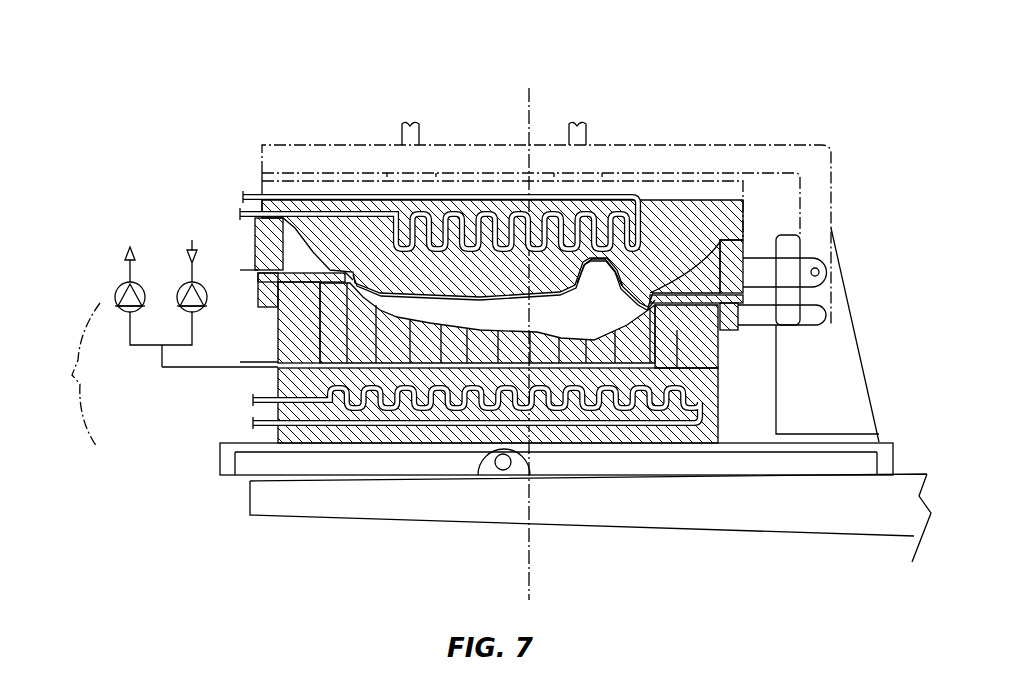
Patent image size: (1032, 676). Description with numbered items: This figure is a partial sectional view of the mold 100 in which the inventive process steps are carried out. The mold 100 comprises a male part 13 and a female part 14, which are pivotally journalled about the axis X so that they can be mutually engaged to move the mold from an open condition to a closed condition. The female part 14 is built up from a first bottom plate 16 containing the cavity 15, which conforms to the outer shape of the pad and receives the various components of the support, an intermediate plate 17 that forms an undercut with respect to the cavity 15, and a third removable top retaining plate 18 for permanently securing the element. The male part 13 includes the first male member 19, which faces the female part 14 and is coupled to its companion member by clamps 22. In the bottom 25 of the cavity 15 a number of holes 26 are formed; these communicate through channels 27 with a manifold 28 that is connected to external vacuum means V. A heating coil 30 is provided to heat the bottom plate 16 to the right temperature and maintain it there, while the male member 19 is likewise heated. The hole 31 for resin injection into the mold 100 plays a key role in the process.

The mold 100 is at (290, 77).
The male part 13 is at (228, 250).
The hole for resin injection 31 is at (258, 273).
The external vacuum means V is at (116, 260).
The female part 14 is at (64, 379).
The channels 27 is at (417, 322).
The first bottom plate 16 is at (288, 381).
The clamps 22 is at (558, 108).
The first male member 19 is at (656, 195).
The third removable top retaining plate 18 is at (745, 240).
The axis X is at (819, 265).
The intermediate plate 17 is at (773, 318).
The manifold 28 is at (688, 371).
The heating coil 30 is at (672, 425).
The holes 26 is at (442, 335).
The cavity 15 is at (516, 320).
The bottom of the cavity 25 is at (574, 338).